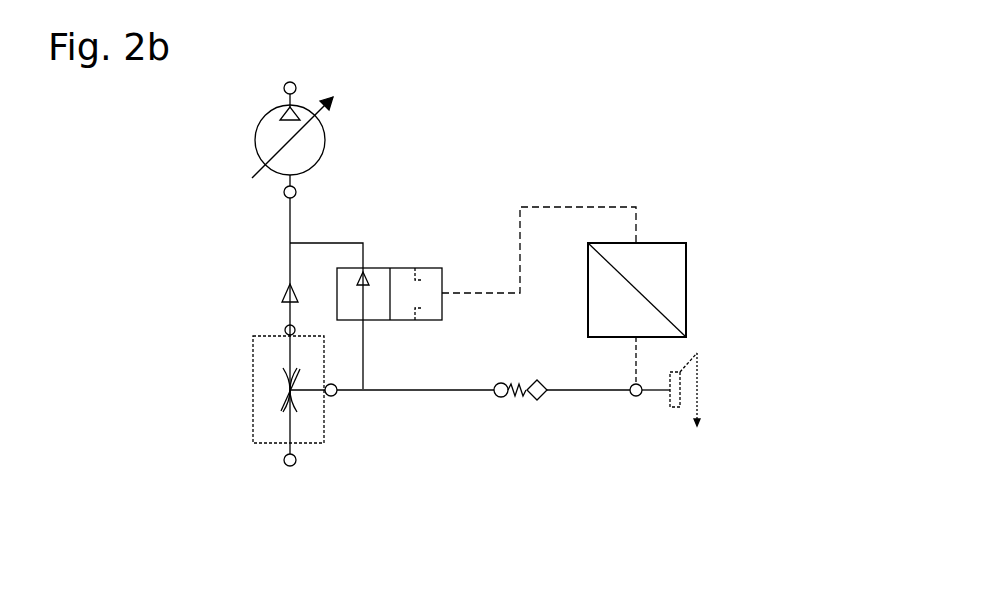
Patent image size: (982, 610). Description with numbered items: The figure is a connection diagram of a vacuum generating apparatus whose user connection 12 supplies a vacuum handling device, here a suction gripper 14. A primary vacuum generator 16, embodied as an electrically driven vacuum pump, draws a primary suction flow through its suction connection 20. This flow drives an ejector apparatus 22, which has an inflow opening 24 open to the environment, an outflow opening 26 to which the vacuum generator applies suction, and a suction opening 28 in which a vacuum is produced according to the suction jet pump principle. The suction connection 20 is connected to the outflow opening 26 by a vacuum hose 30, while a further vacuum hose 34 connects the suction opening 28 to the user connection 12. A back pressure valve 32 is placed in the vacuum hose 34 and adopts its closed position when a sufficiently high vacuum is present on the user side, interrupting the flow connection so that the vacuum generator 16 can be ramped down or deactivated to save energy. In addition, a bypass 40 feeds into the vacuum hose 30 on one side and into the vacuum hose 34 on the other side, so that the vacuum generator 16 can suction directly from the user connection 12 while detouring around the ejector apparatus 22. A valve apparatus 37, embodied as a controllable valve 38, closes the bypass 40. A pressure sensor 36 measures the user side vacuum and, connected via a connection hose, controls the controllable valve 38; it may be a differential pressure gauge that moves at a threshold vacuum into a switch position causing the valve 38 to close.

The user connection 12 is at (636, 397).
The suction gripper 14 is at (690, 388).
The primary vacuum generator 16 is at (308, 147).
The suction connection 20 is at (296, 188).
The ejector apparatus 22 is at (237, 385).
The inflow opening 24 is at (295, 466).
The outflow opening 26 is at (287, 330).
The suction opening 28 is at (337, 396).
The vacuum hose 30 is at (290, 230).
The back pressure valve 32 is at (524, 402).
The vacuum hose 34 is at (435, 391).
The pressure sensor 36 is at (686, 262).
The valve apparatus 37 is at (525, 209).
The controllable valve 38 is at (433, 261).
The bypass 40 is at (463, 244).